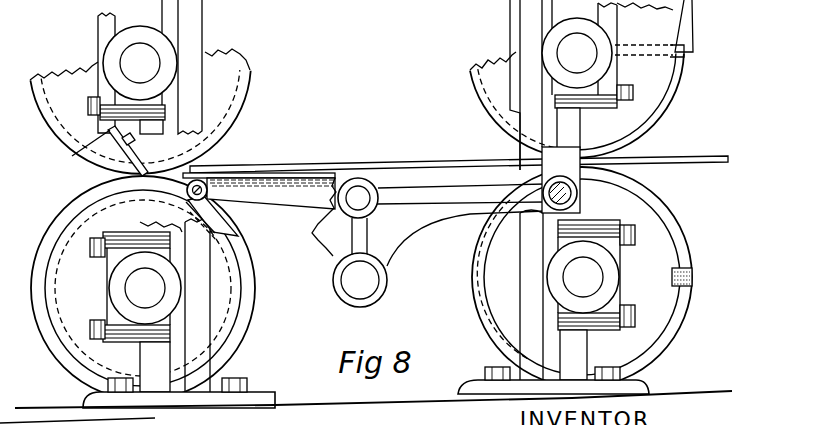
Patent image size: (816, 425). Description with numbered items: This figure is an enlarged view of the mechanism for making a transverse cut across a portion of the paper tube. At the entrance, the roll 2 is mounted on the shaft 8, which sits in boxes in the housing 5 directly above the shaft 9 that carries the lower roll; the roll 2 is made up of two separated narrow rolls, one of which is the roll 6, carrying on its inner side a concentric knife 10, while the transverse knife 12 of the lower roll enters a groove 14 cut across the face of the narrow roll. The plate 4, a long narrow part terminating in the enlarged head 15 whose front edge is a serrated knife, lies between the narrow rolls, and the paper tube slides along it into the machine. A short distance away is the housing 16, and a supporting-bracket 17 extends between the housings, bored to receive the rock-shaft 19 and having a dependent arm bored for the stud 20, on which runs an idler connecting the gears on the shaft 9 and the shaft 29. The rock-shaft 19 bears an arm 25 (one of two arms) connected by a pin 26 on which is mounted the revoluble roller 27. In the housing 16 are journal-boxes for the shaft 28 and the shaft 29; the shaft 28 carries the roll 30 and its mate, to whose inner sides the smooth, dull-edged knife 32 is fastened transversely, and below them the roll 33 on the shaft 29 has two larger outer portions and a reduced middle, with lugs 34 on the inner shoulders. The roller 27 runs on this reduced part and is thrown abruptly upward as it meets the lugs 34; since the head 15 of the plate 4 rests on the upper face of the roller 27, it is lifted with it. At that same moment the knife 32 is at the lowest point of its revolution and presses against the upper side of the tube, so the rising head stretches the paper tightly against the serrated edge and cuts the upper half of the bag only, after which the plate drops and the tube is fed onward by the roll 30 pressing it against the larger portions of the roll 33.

The roll 2 is at (590, 80).
The plate 4 is at (470, 161).
The housing 5 is at (531, 190).
The narrow roll 6 is at (568, 124).
The shaft 8 is at (587, 75).
The shaft 9 is at (588, 263).
The knife 10 is at (699, 26).
The knife 12 is at (692, 269).
The groove 14 is at (683, 56).
The enlarged head 15 is at (259, 164).
The housing 16 is at (154, 196).
The supporting-bracket 17 is at (428, 222).
The rock-shaft 19 is at (358, 198).
The stud 20 is at (360, 280).
The arm 25 is at (271, 193).
The pin 26 is at (195, 189).
The roller 27 is at (208, 185).
The shaft 28 is at (132, 80).
The shaft 29 is at (136, 307).
The roll 30 is at (140, 111).
The knife 32 is at (119, 151).
The roll 33 is at (143, 288).
The lug 34 is at (203, 214).